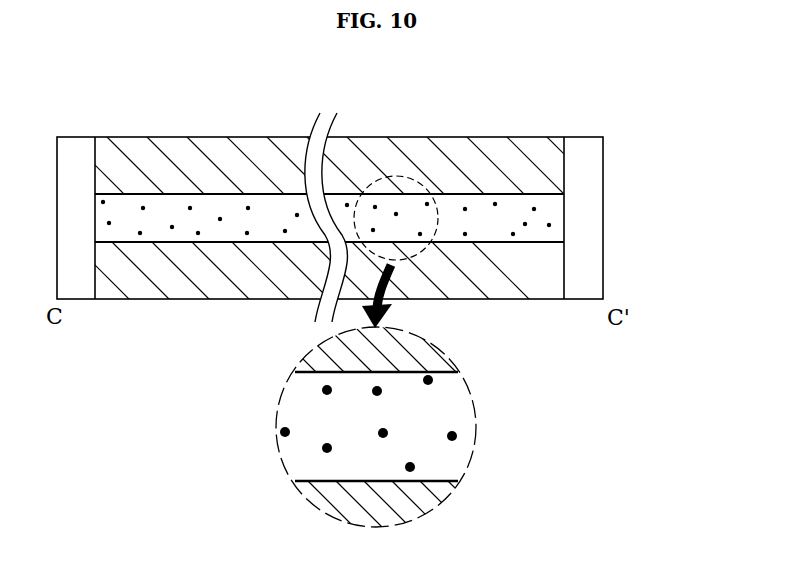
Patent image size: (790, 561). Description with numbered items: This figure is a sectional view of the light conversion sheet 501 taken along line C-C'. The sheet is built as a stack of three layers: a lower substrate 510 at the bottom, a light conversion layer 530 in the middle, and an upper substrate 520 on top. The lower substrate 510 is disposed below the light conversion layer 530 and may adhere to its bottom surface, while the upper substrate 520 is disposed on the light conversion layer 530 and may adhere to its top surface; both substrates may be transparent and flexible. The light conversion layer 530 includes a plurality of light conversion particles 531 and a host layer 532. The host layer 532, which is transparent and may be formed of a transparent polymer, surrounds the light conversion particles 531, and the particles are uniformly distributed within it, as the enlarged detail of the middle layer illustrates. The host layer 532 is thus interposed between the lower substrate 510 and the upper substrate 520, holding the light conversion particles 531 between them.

The light conversion sheet 501 is at (89, 91).
The lower substrate 510 is at (553, 277).
The upper substrate 520 is at (553, 165).
The light conversion layer 530 is at (668, 196).
The light conversion particles 531 is at (550, 200).
The host layer 532 is at (548, 226).